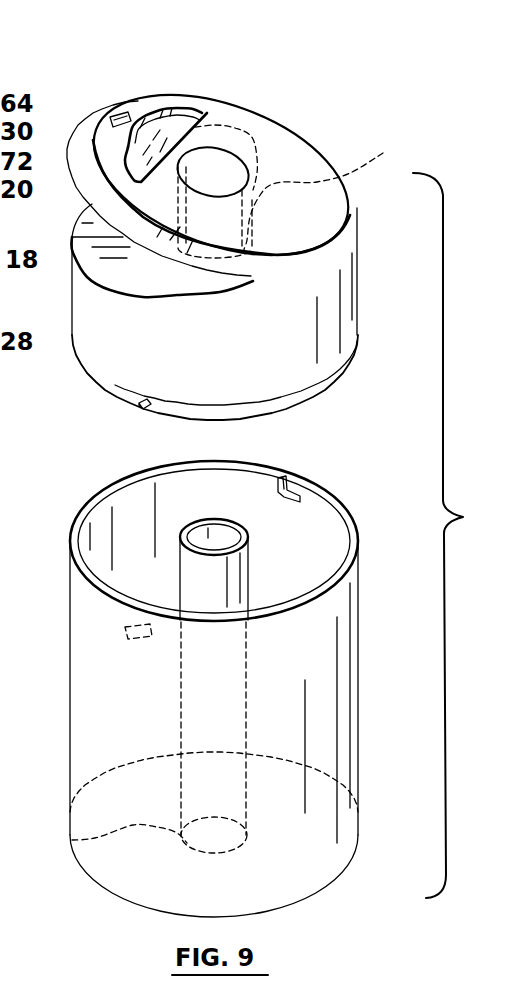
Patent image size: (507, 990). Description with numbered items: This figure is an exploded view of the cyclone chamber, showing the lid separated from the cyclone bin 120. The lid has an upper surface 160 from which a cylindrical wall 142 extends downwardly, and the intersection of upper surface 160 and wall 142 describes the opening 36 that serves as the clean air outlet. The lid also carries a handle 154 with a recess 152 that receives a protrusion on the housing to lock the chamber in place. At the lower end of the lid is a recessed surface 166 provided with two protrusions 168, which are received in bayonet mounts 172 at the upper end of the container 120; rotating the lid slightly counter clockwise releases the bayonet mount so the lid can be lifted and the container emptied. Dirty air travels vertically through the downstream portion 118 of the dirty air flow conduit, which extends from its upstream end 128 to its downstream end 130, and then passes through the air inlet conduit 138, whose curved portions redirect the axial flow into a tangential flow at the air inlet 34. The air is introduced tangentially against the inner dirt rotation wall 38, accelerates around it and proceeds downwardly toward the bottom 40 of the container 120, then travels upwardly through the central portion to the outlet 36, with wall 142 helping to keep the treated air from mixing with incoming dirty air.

The upper surface 160 is at (327, 228).
The recess 152 is at (116, 114).
The handle 154 is at (157, 100).
The air inlet 34 is at (207, 112).
The outlet 36 is at (237, 173).
The air inlet conduit 138 is at (240, 140).
The cylindrical wall 142 is at (334, 185).
The recessed surface 166 is at (117, 394).
The protrusions 168 is at (141, 412).
The bayonet mounts 172 is at (290, 477).
The downstream end 130 is at (245, 537).
The inner dirt rotation wall 38 is at (80, 552).
The downstream portion 118 is at (182, 690).
The cyclone bin 120 is at (70, 770).
The upstream end 128 is at (72, 840).
The bottom 40 is at (110, 858).